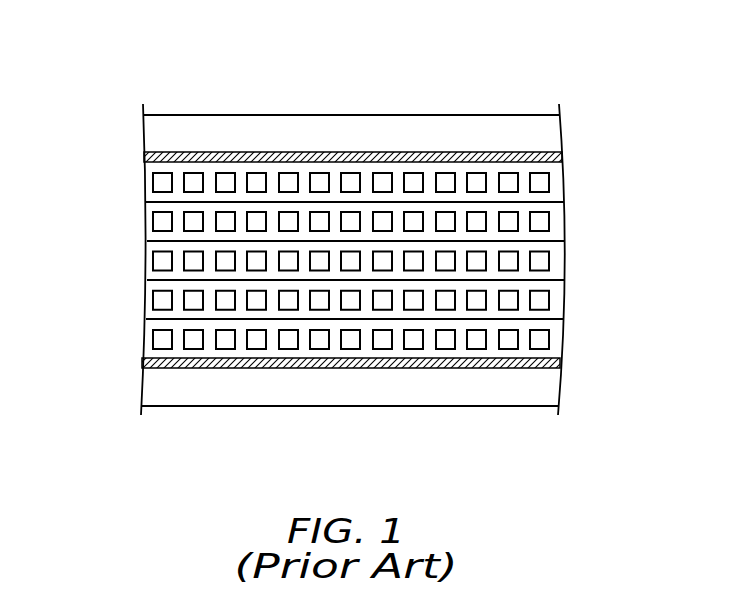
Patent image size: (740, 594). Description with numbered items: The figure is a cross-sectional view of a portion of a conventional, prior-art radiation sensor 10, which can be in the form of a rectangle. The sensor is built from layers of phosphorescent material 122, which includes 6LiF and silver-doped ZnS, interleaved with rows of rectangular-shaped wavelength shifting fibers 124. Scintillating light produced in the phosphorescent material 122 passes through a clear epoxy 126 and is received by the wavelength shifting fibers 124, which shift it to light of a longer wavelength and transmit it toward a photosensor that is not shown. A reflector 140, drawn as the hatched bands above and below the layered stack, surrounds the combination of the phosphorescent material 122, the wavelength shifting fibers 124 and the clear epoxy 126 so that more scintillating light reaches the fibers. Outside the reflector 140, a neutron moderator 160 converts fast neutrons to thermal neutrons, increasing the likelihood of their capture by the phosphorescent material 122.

The radiation sensor 10 is at (550, 56).
The phosphorescent material 122 is at (134, 317).
The wavelength shifting fibers 124 is at (394, 260).
The clear epoxy 126 is at (300, 257).
The reflector 140 is at (212, 152).
The neutron moderator 160 is at (551, 143).